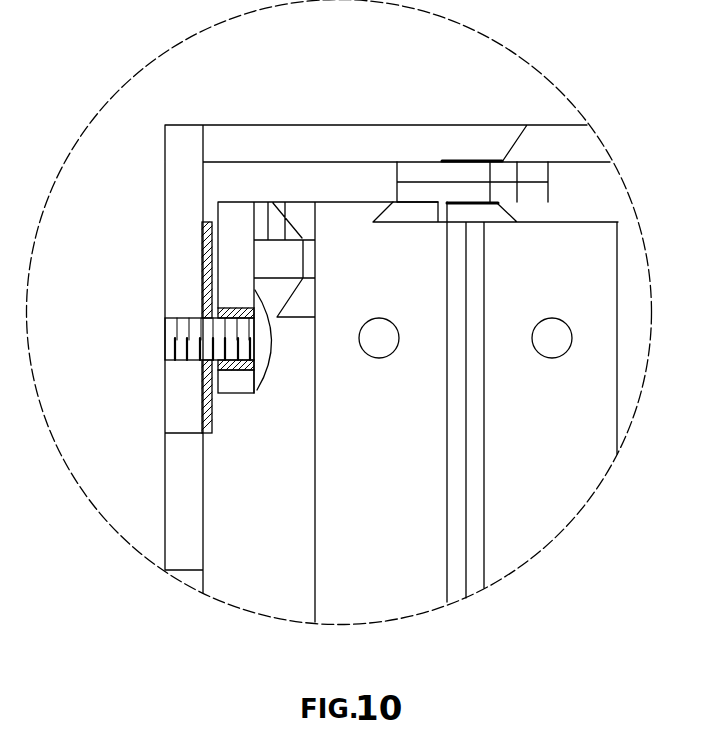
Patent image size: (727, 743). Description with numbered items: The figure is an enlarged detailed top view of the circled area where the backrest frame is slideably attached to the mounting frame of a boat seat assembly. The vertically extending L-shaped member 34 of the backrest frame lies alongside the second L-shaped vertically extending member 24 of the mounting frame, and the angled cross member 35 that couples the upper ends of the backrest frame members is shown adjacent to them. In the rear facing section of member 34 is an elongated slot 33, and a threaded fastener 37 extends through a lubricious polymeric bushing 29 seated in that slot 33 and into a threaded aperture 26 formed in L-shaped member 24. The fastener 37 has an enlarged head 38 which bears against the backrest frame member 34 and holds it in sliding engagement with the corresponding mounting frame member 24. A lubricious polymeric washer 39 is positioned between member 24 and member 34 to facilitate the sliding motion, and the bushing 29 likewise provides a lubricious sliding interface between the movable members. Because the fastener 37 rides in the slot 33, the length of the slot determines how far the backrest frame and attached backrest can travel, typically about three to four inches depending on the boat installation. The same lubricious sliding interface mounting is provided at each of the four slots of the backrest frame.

The second L-shaped vertically extending member 24 is at (178, 257).
The threaded aperture 26 is at (180, 319).
The lubricious polymeric bushing 29 is at (228, 373).
The elongated slot 33 is at (228, 353).
The L-shaped member 34 is at (236, 237).
The angled cross member 35 is at (408, 597).
The threaded fastener 37 is at (168, 343).
The enlarged head 38 is at (262, 338).
The lubricious polymeric washer 39 is at (210, 425).